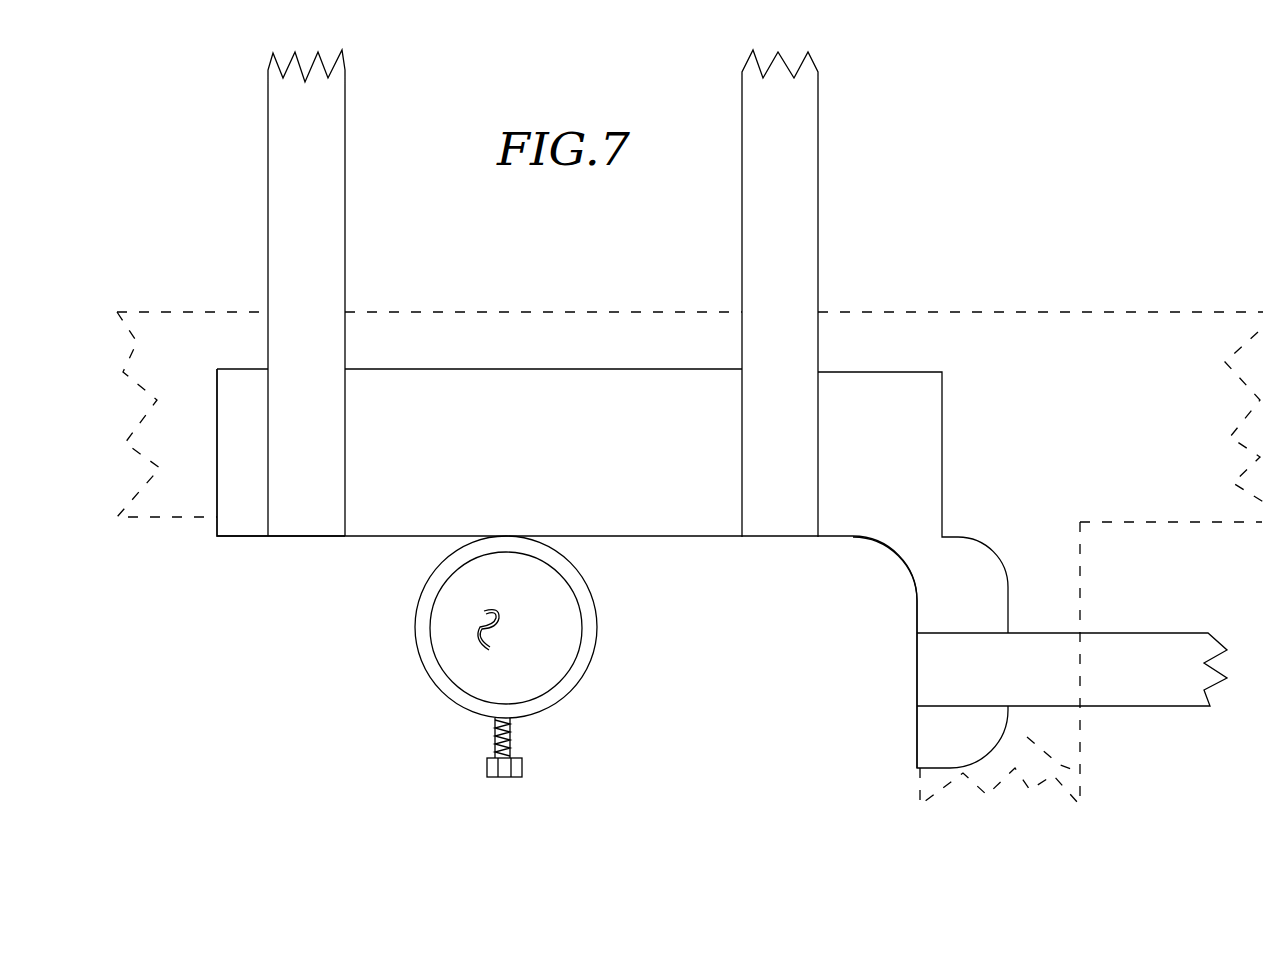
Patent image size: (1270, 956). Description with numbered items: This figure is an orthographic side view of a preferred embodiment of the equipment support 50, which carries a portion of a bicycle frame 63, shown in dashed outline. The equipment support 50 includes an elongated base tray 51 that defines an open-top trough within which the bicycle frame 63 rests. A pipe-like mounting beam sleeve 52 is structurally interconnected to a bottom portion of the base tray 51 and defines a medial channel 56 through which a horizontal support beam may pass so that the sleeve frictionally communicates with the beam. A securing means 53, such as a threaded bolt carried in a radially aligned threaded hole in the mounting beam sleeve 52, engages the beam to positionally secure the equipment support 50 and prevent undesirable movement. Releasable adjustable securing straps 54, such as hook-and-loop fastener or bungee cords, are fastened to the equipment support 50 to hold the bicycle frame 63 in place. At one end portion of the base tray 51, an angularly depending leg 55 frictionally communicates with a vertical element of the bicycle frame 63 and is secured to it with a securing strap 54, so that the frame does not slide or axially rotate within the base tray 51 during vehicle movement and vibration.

The equipment support 50 is at (696, 538).
The base tray 51 is at (383, 503).
The mounting beam sleeve 52 is at (585, 643).
The securing means 53 is at (500, 745).
The securing straps 54 is at (315, 182).
The angular leg 55 is at (932, 611).
The medial channel 56 is at (482, 613).
The bicycle frame 63 is at (482, 330).